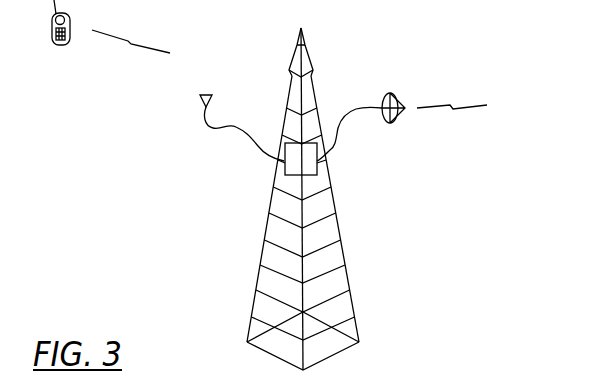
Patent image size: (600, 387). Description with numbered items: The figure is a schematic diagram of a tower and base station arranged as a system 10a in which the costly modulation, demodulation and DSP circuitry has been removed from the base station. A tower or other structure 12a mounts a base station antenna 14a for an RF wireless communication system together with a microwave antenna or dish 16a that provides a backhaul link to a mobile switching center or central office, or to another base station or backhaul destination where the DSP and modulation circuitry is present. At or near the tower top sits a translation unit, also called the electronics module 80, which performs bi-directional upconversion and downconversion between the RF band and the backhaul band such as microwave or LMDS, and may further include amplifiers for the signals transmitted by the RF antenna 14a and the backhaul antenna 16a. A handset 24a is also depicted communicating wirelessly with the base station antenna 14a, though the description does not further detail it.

The system 10a is at (198, 233).
The tower 12a is at (331, 177).
The base station antenna 14a is at (200, 98).
The microwave antenna or dish 16a is at (390, 93).
The mobile phone 24a is at (60, 45).
The translation unit 80 is at (285, 149).